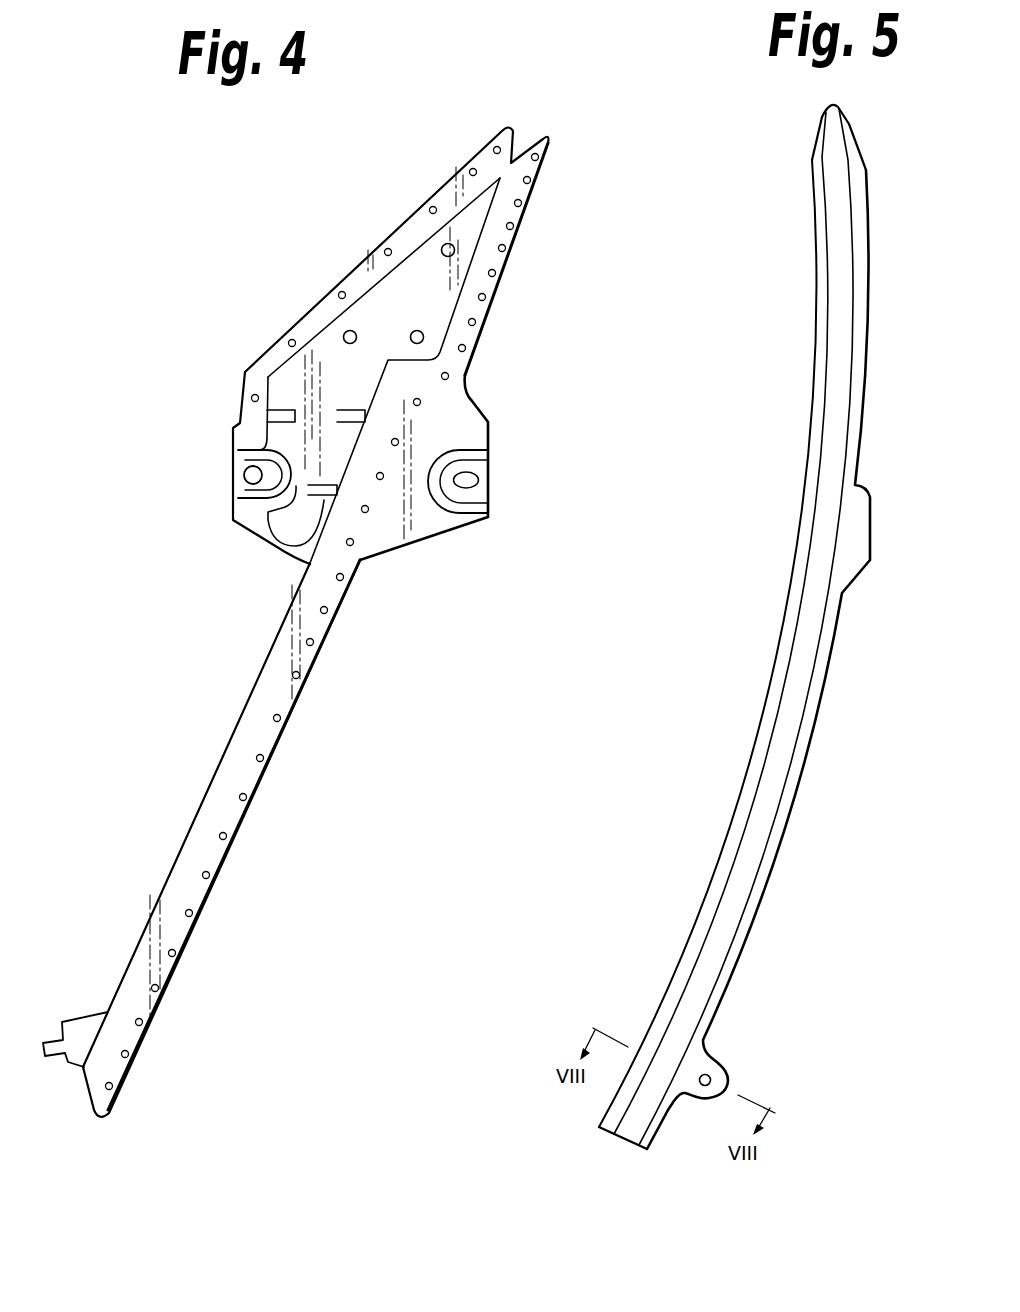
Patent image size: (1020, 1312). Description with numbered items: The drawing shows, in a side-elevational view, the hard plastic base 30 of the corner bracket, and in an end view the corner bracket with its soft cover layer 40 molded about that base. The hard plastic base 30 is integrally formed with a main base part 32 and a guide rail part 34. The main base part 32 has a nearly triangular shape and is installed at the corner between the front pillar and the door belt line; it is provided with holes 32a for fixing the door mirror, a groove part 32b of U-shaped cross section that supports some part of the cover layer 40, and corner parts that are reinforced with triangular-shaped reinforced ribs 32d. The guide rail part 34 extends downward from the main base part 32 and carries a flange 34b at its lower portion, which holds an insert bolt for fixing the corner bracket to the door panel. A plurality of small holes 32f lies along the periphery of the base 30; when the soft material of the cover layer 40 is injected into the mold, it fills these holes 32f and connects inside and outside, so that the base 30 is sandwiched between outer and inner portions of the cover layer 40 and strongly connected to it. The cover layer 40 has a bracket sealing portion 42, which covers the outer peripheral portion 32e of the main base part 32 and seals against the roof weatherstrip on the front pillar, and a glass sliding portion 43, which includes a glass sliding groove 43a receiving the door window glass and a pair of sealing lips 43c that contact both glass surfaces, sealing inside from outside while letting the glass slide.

In FIG. 4, the hard plastic base 30 is at (246, 348).
In FIG. 4, the main base part 32 is at (427, 252).
In FIG. 4, the holes 32a is at (347, 333).
In FIG. 4, the groove part 32b is at (497, 290).
In FIG. 4, the reinforced ribs 32d is at (320, 496).
In FIG. 4, the outer peripheral portion 32e is at (438, 180).
In FIG. 4, the small holes 32f is at (473, 169).
In FIG. 4, the guide rail part 34 is at (200, 832).
In FIG. 4, the flange part 34b is at (85, 1020).
In FIG. 5, the cover layer 40 is at (808, 278).
In FIG. 5, the bracket sealing portion 42 is at (813, 208).
In FIG. 5, the glass sliding portion 43 is at (742, 795).
In FIG. 5, the glass sliding groove 43a is at (740, 878).
In FIG. 5, the sealing lips 43c is at (770, 727).